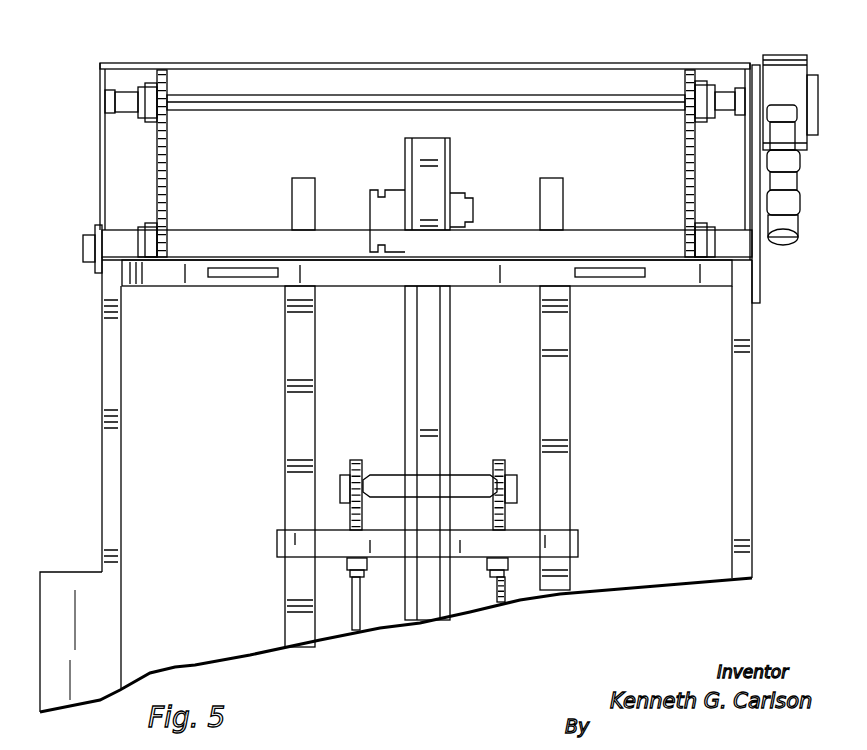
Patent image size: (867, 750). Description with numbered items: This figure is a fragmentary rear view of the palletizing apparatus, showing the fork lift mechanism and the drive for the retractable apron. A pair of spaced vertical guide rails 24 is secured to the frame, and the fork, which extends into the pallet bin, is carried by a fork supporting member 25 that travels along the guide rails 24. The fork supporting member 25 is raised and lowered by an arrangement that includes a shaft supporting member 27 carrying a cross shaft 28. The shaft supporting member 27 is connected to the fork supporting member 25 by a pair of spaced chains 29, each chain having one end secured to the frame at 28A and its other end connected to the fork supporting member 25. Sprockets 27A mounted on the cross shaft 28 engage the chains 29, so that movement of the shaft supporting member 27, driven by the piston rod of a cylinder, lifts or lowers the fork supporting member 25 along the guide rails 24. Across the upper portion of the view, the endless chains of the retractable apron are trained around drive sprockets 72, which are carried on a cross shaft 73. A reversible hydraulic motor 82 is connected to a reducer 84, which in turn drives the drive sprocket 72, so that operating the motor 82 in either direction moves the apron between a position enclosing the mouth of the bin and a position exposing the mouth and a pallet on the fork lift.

The vertical guide rail 24 is at (290, 412).
The fork supporting member 25 is at (430, 612).
The shaft supporting member 27 is at (390, 487).
The sprocket 27A is at (352, 462).
The cross shaft 28 is at (517, 483).
The chain anchor point on frame 28A is at (360, 565).
The chain 29 is at (360, 515).
The drive sprocket 72 is at (150, 121).
The cross shaft 73 is at (590, 102).
The reversible hydraulic motor 82 is at (788, 222).
The reducer 84 is at (790, 60).